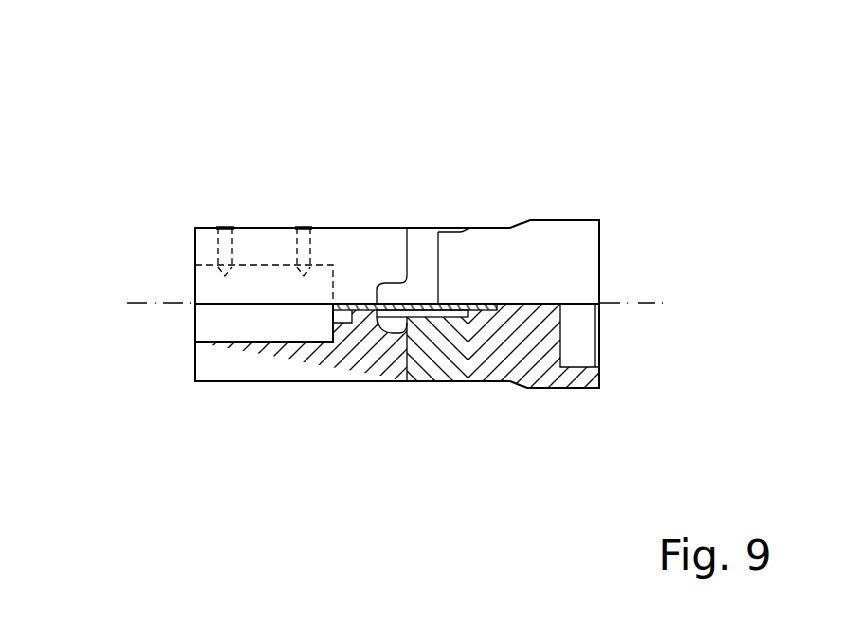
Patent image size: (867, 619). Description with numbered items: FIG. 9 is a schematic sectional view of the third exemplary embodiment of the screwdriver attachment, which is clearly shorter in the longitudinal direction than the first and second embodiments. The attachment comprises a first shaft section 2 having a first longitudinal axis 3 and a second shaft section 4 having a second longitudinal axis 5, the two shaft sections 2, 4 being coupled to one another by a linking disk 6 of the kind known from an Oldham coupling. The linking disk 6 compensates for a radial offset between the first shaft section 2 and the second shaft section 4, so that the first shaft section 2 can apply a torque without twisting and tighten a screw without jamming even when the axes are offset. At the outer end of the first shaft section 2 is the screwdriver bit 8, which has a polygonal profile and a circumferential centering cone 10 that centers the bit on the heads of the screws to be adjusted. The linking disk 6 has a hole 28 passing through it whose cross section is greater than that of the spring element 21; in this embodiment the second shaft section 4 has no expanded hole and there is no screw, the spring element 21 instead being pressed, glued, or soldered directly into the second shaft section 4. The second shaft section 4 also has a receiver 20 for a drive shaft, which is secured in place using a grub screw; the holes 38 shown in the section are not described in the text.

The first shaft section 2 is at (503, 208).
The first longitudinal axis 3 is at (642, 302).
The second shaft section 4 is at (348, 206).
The second longitudinal axis 5 is at (138, 302).
The linking disk 6 is at (423, 253).
The screwdriver bit 8 is at (570, 410).
The centering cone 10 is at (599, 366).
The receiver 20 is at (216, 327).
The spring element 21 is at (486, 312).
The hole 28 is at (437, 330).
The threaded holes 38 is at (226, 226).